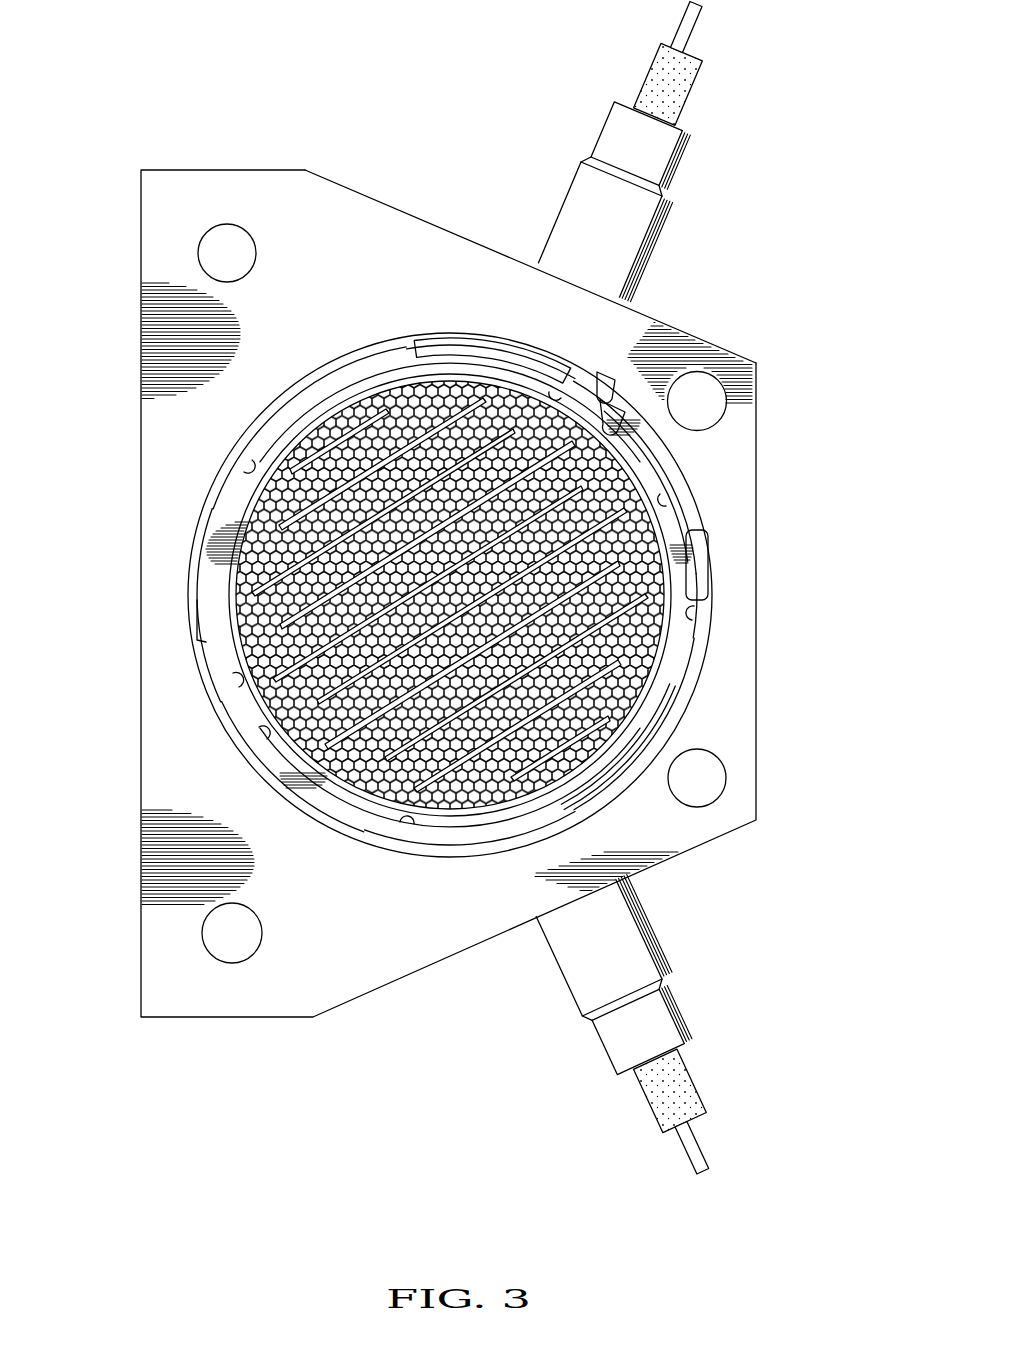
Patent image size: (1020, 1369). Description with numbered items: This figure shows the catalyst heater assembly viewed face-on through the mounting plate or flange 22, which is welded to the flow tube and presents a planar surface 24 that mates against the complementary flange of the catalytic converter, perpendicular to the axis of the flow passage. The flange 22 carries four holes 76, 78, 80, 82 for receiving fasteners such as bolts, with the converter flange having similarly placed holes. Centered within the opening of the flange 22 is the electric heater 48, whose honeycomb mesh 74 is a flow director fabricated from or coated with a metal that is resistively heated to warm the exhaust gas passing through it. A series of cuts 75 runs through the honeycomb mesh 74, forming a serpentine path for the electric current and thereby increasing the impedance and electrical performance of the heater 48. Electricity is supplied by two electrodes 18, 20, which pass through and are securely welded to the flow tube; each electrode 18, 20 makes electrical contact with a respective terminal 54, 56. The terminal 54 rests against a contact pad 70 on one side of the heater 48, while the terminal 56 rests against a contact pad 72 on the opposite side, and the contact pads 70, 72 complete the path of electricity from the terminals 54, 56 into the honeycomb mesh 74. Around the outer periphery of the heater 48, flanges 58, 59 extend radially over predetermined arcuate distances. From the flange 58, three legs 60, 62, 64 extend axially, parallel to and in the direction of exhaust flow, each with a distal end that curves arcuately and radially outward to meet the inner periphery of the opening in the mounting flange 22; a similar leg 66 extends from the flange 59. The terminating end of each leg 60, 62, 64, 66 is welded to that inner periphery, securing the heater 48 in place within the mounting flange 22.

The electrode 18 is at (663, 214).
The electrode 20 is at (672, 957).
The mounting plate or flange 22 is at (395, 209).
The planar surface 24 is at (276, 183).
The electric heater 48 is at (604, 388).
The terminal 54 is at (462, 350).
The terminal 56 is at (603, 765).
The flange 58 is at (280, 760).
The flange 59 is at (617, 404).
The leg 60 is at (323, 362).
The leg 62 is at (198, 622).
The leg 64 is at (330, 823).
The leg 66 is at (670, 593).
The contact pad 70 is at (389, 378).
The contact pad 72 is at (660, 677).
The honeycomb mesh 74 is at (620, 492).
The cuts 75 is at (336, 553).
The hole 76 is at (212, 246).
The hole 78 is at (220, 958).
The hole 80 is at (700, 429).
The hole 82 is at (718, 804).